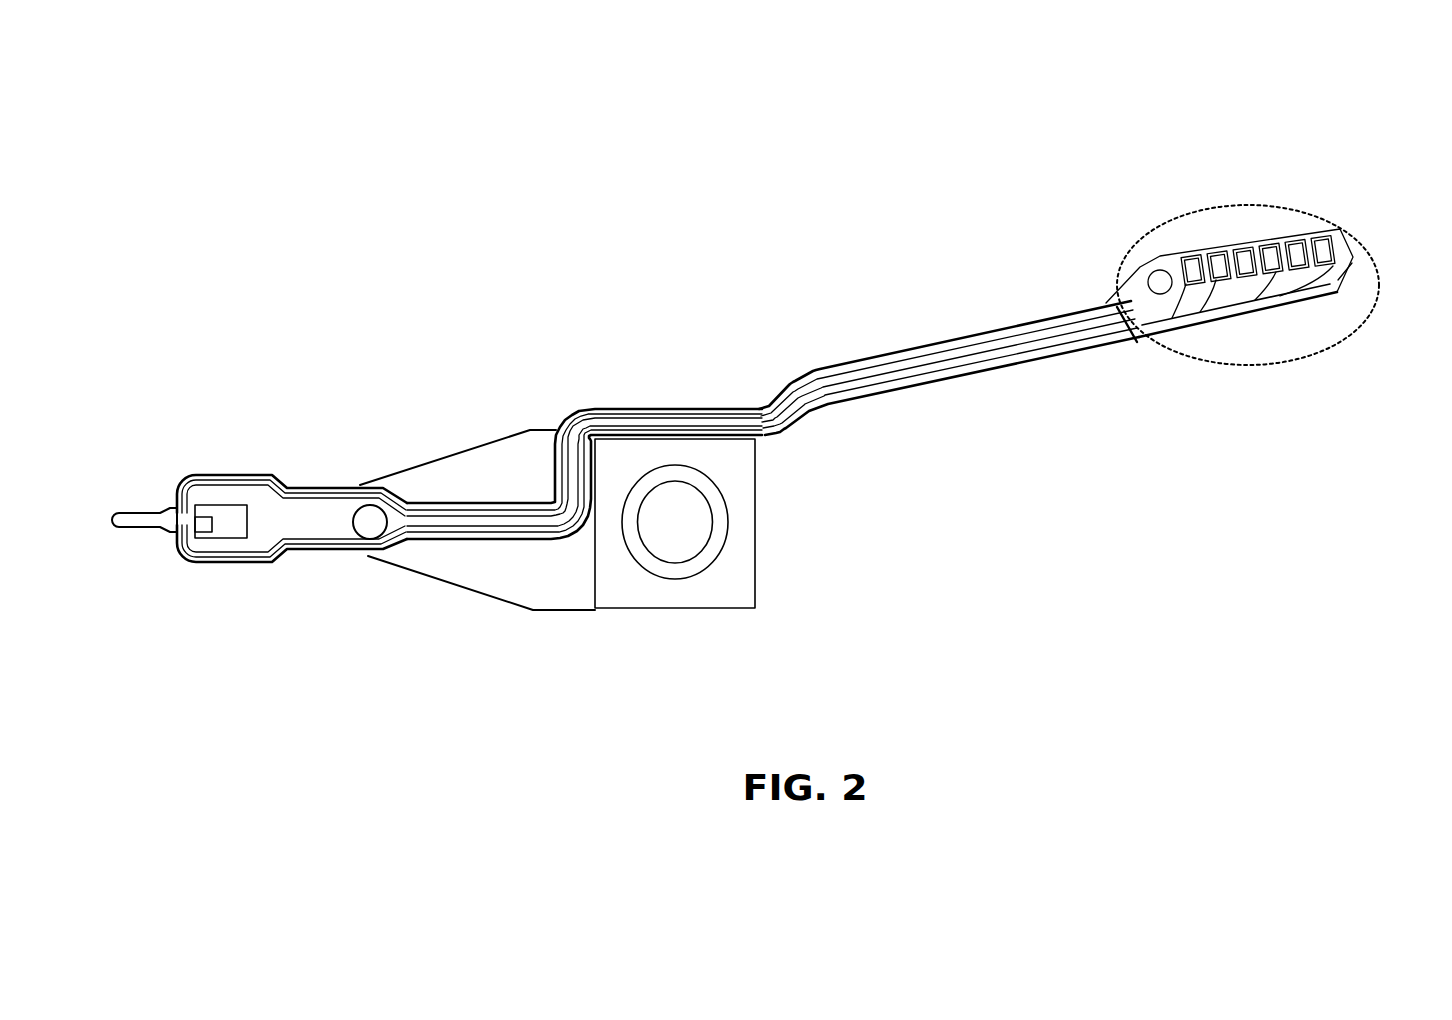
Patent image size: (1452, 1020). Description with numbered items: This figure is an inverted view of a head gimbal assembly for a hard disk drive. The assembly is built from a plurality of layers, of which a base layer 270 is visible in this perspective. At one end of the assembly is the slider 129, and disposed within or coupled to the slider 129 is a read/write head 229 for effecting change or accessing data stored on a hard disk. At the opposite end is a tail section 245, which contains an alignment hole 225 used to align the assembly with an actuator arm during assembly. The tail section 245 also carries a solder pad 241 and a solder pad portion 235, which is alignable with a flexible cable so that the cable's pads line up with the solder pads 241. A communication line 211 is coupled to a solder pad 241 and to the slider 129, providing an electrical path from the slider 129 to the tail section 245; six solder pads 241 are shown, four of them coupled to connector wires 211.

The slider 129 is at (225, 527).
The read/write head 229 is at (203, 518).
The communication line 211 is at (970, 342).
The alignment hole 225 is at (1157, 279).
The solder pad portion 235 is at (1170, 267).
The solder pad 241 is at (1334, 264).
The base layer 270 is at (1269, 220).
The tail section 245 is at (1193, 362).